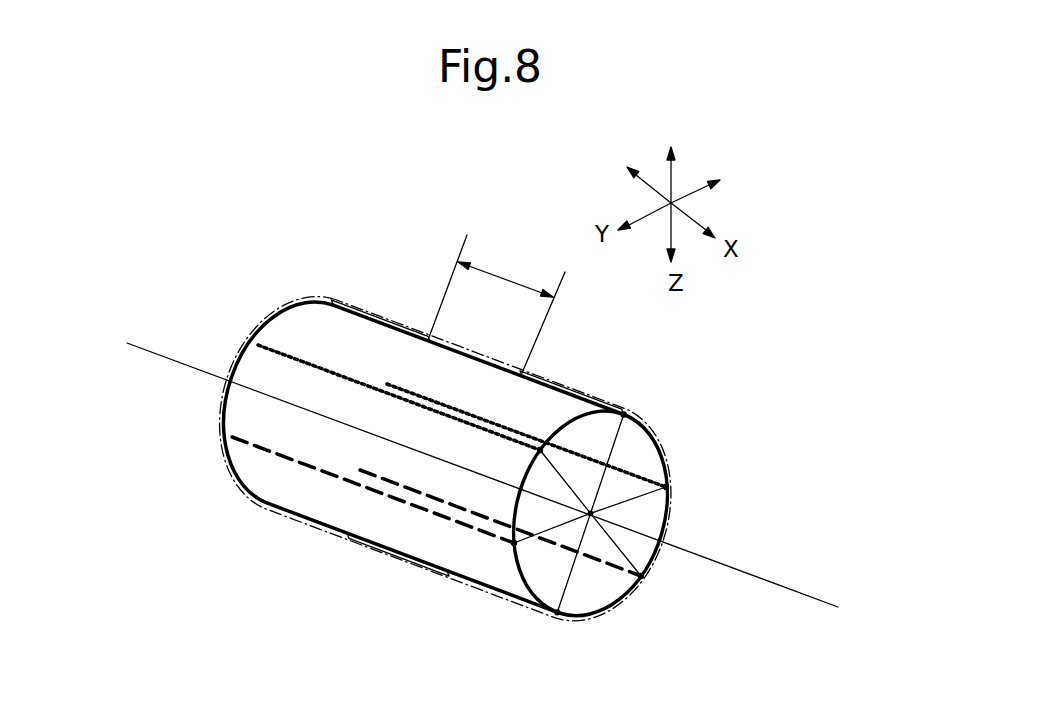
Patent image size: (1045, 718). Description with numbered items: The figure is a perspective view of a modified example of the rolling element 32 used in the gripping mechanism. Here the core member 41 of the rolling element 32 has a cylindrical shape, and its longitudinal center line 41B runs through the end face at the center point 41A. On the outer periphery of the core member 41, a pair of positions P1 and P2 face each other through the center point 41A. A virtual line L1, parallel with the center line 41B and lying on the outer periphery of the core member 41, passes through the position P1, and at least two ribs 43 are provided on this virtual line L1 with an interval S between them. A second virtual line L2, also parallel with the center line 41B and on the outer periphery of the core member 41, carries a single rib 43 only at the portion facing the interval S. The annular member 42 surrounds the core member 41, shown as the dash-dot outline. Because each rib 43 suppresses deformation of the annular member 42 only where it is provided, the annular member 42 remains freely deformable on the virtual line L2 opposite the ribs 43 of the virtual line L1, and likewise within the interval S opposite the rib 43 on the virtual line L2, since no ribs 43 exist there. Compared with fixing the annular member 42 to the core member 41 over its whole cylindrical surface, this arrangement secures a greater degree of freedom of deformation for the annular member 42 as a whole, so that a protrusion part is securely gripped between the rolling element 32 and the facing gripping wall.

The rolling element 32 is at (285, 290).
The core member 41 is at (658, 447).
The center point 41A is at (591, 515).
The center line 41B is at (795, 588).
The annular member 42 is at (237, 493).
The ribs 43 is at (350, 302).
The virtual line L1 is at (437, 344).
The virtual line L2 is at (405, 383).
The position P1 is at (622, 413).
The position P2 is at (539, 449).
The interval S is at (496, 304).